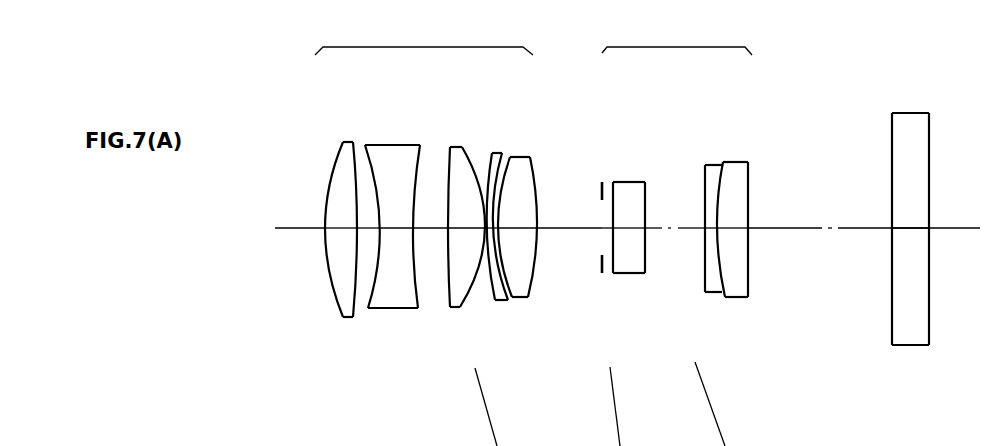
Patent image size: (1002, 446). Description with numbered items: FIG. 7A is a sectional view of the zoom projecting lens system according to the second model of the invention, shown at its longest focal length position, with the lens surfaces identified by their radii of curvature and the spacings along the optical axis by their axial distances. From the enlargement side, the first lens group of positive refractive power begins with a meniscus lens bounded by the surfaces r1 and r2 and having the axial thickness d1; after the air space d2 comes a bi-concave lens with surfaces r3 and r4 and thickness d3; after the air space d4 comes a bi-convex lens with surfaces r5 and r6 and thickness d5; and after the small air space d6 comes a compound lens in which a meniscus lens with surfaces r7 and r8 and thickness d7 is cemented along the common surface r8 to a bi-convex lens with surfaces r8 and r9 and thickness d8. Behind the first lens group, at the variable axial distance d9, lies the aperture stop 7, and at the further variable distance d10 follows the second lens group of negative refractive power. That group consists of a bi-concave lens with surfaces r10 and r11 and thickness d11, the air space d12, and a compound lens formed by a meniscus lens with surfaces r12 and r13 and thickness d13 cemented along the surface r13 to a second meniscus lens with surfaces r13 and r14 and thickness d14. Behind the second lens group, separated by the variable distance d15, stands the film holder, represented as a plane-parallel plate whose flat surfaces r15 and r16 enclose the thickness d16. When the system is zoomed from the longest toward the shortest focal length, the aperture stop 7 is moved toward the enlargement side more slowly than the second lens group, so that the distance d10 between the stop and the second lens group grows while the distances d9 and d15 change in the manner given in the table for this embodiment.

The aperture stop 7 is at (600, 183).
The first refracting surface r1 is at (327, 195).
The second refracting surface r2 is at (352, 148).
The third refracting surface r3 is at (378, 185).
The fourth refracting surface r4 is at (417, 175).
The fifth refracting surface r5 is at (450, 172).
The sixth refracting surface r6 is at (481, 185).
The seventh refracting surface r7 is at (492, 160).
The eighth refracting surface r8 is at (503, 154).
The ninth refracting surface r9 is at (533, 168).
The tenth refracting surface r10 is at (613, 182).
The eleventh refracting surface r11 is at (646, 182).
The twelfth refracting surface r12 is at (704, 167).
The thirteenth refracting surface r13 is at (725, 163).
The fourteenth refracting surface r14 is at (750, 175).
The fifteenth surface r15 is at (890, 170).
The sixteenth surface r16 is at (930, 142).
The first axial distance d1 is at (337, 228).
The second axial distance d2 is at (359, 228).
The third axial distance d3 is at (396, 228).
The fourth axial distance d4 is at (432, 228).
The fifth axial distance d5 is at (463, 228).
The sixth axial distance d6 is at (487, 228).
The seventh axial distance d7 is at (505, 228).
The eighth axial distance d8 is at (523, 228).
The ninth axial distance d9 is at (577, 228).
The tenth axial distance d10 is at (607, 228).
The eleventh axial distance d11 is at (630, 228).
The twelfth axial distance d12 is at (660, 228).
The thirteenth axial distance d13 is at (712, 228).
The fourteenth axial distance d14 is at (738, 228).
The fifteenth axial distance d15 is at (808, 228).
The sixteenth axial distance d16 is at (912, 230).